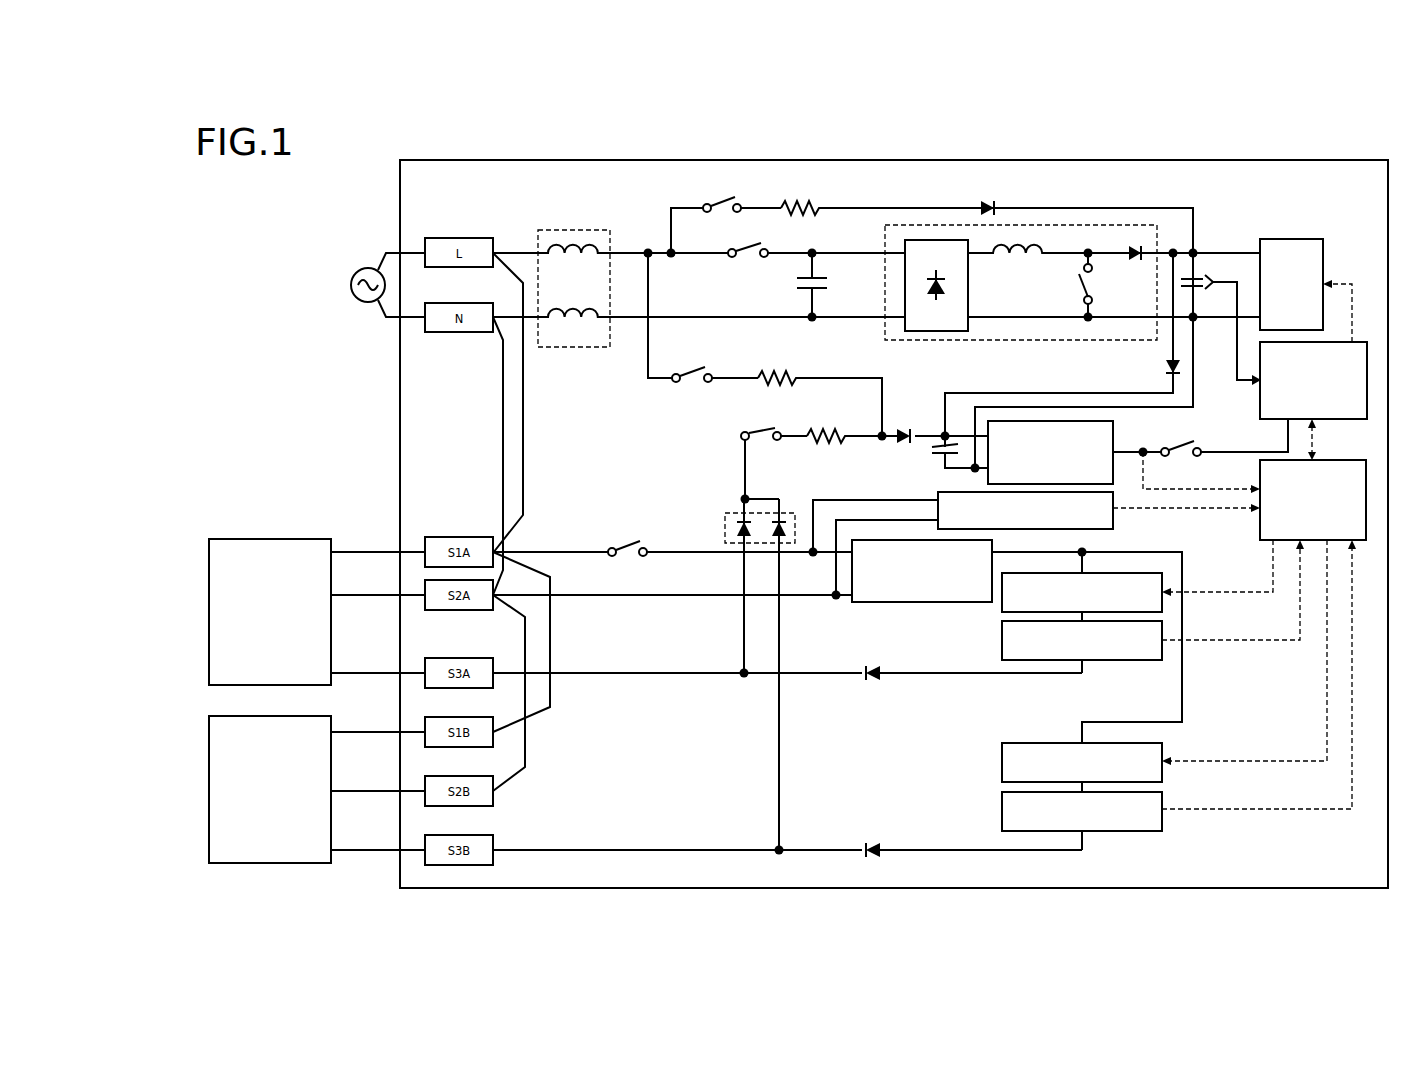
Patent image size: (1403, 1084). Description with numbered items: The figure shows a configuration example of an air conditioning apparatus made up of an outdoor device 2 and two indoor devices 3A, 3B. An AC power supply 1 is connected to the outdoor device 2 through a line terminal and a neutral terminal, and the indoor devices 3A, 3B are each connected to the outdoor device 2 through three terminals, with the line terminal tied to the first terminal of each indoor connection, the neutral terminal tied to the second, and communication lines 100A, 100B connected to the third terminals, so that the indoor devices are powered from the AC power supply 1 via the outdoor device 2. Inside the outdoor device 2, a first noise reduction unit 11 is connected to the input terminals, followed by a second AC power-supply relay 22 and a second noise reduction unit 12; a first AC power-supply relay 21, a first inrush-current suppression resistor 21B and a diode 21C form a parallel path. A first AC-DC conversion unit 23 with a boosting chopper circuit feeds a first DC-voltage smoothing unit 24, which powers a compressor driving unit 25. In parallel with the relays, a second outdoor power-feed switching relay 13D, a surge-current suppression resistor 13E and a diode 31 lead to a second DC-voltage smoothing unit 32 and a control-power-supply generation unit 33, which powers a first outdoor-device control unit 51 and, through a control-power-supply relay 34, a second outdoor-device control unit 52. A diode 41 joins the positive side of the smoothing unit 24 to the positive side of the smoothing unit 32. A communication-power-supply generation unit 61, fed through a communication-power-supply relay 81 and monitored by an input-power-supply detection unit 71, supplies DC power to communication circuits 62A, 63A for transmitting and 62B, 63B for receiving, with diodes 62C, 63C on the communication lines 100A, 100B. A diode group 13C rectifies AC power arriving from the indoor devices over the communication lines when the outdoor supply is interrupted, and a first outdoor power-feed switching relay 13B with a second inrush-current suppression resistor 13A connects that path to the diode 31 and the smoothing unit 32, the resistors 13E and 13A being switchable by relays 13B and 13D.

The AC power supply 1 is at (351, 285).
The outdoor device 2 is at (1122, 888).
The indoor device 3A is at (290, 539).
The indoor device 3B is at (290, 716).
The first noise reduction unit 11 is at (576, 230).
The second noise reduction unit 12 is at (818, 290).
The second inrush-current suppression resistor 13A is at (826, 428).
The first outdoor power-feed switching relay 13B is at (752, 430).
The diode group 13C is at (725, 525).
The second outdoor power-feed switching relay 13D is at (688, 371).
The surge-current suppression resistor 13E is at (776, 371).
The first AC power-supply relay 21 is at (708, 199).
The first inrush-current suppression resistor 21B is at (797, 201).
The diode 21C is at (996, 205).
The second AC power-supply relay 22 is at (752, 255).
The first AC-DC conversion unit 23 is at (938, 340).
The first DC-voltage smoothing unit 24 is at (1206, 275).
The compressor driving unit 25 is at (1292, 239).
The diode 31 is at (906, 428).
The second DC-voltage smoothing unit 32 is at (930, 450).
The control-power-supply generation unit 33 is at (1113, 433).
The control-power-supply relay 34 is at (1180, 446).
The diode 41 is at (1164, 370).
The first outdoor-device control unit 51 is at (1352, 460).
The second outdoor-device control unit 52 is at (1260, 395).
The communication-power-supply generation unit 61 is at (930, 602).
The communication circuit 62A is at (1162, 580).
The communication circuit 62B is at (1162, 630).
The diode 62C is at (872, 682).
The communication circuit 63A is at (1162, 750).
The communication circuit 63B is at (1162, 800).
The diode 63C is at (872, 840).
The input-power-supply detection unit 71 is at (1113, 526).
The communication-power-supply relay 81 is at (626, 543).
The communication line 100A is at (630, 678).
The communication line 100B is at (645, 845).